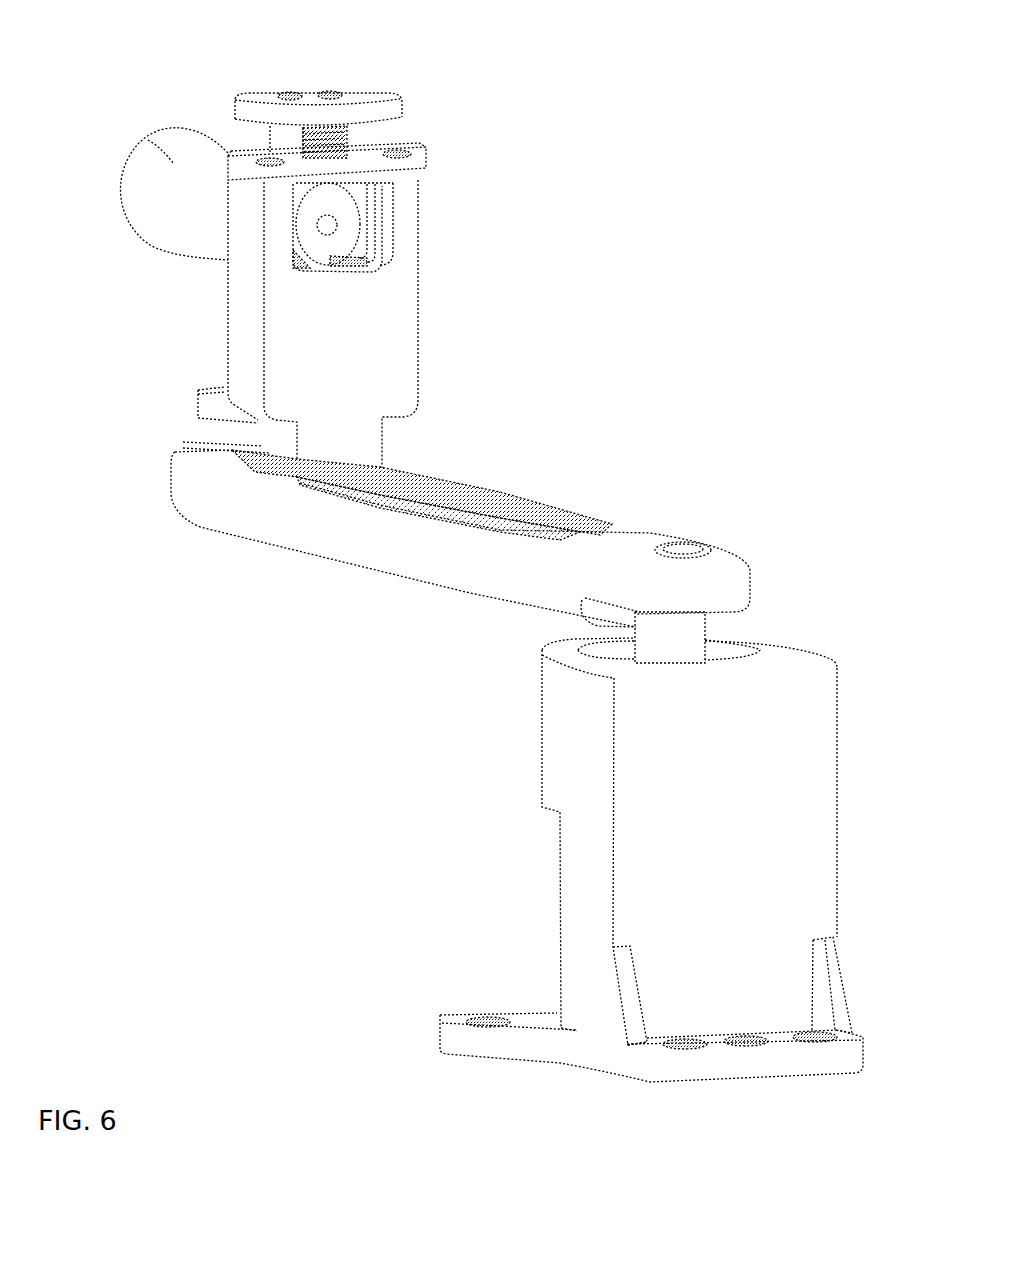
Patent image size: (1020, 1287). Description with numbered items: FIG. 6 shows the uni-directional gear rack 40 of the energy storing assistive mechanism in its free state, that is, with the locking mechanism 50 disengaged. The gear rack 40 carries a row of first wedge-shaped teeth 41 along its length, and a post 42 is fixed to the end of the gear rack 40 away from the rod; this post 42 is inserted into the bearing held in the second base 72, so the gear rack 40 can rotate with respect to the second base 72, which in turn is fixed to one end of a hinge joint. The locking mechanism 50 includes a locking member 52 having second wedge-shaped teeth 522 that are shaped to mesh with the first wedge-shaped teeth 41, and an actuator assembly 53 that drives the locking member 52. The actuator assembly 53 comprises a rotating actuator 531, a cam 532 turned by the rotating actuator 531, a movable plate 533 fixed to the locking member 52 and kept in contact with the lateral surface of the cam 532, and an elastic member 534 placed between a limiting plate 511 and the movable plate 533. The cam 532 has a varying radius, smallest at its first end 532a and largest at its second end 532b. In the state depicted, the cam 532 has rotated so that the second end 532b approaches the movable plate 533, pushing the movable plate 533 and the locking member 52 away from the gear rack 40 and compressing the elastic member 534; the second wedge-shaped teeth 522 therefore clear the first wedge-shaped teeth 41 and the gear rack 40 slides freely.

The uni-directional gear rack 40 is at (366, 559).
The first wedge-shaped teeth 41 is at (287, 476).
The post 42 is at (688, 636).
The locking mechanism 50 is at (439, 307).
The limiting plate 511 is at (313, 118).
The locking member 52 is at (280, 440).
The second wedge-shaped teeth 522 is at (282, 461).
The actuator assembly 53 is at (187, 130).
The rotating actuator 531 is at (148, 140).
The cam 532 is at (352, 226).
The first end 532a is at (345, 254).
The second end 532b is at (357, 172).
The movable plate 533 is at (372, 166).
The elastic member 534 is at (346, 146).
The second base 72 is at (561, 886).